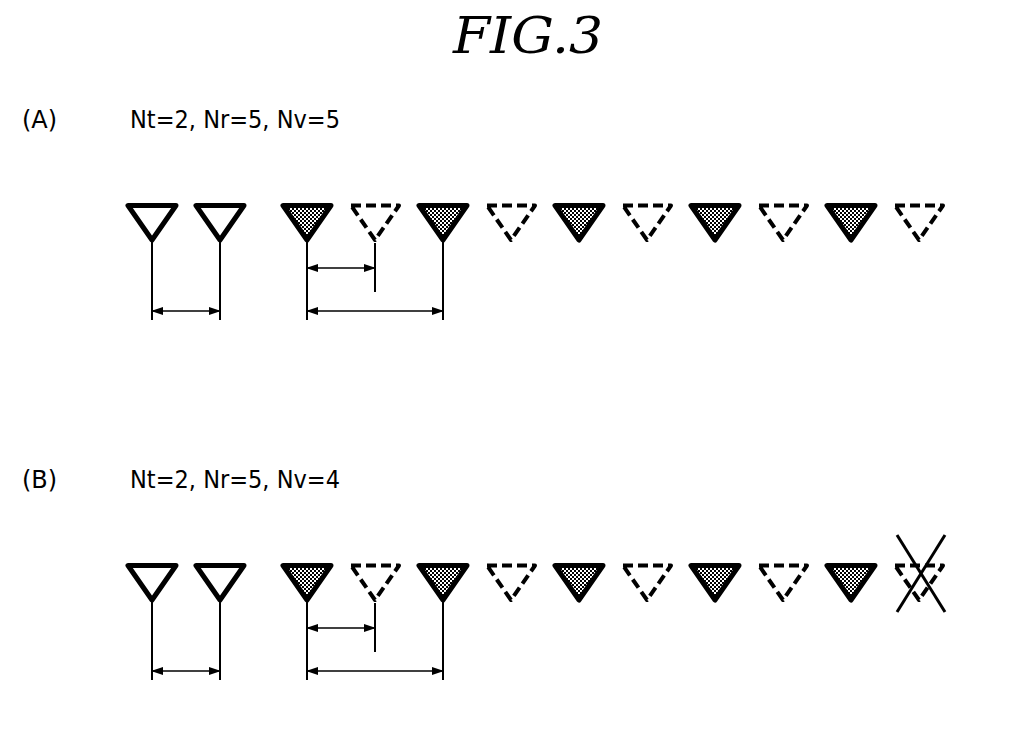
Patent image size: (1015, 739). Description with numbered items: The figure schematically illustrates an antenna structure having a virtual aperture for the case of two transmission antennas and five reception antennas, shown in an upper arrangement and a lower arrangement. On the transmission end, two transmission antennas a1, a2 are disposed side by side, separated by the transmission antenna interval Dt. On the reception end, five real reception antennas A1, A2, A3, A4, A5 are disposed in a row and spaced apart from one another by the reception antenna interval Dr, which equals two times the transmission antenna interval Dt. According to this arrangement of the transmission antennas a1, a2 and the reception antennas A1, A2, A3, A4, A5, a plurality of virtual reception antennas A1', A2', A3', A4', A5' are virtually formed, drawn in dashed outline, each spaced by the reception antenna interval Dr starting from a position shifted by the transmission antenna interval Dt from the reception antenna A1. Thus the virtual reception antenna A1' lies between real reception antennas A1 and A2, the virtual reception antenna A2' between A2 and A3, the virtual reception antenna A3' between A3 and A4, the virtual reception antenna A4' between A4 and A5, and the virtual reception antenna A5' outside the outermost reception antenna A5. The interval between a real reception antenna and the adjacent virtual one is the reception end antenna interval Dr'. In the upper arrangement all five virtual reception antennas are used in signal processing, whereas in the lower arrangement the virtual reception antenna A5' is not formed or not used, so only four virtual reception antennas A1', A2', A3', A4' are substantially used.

The transmission antenna a1 is at (152, 427).
The transmission antenna a2 is at (220, 427).
The reception antenna A1 is at (307, 427).
The virtual reception antenna A1' is at (375, 413).
The reception antenna A2 is at (443, 427).
The virtual reception antenna A2' is at (511, 387).
The reception antenna A3 is at (579, 387).
The virtual reception antenna A3' is at (647, 387).
The reception antenna A4 is at (715, 387).
The virtual reception antenna A4' is at (783, 387).
The reception antenna A5 is at (851, 387).
The virtual reception antenna A5' is at (920, 393).
The transmission antenna interval Dt is at (186, 508).
The reception antenna interval Dr is at (375, 508).
The reception end antenna interval Dr' is at (341, 465).